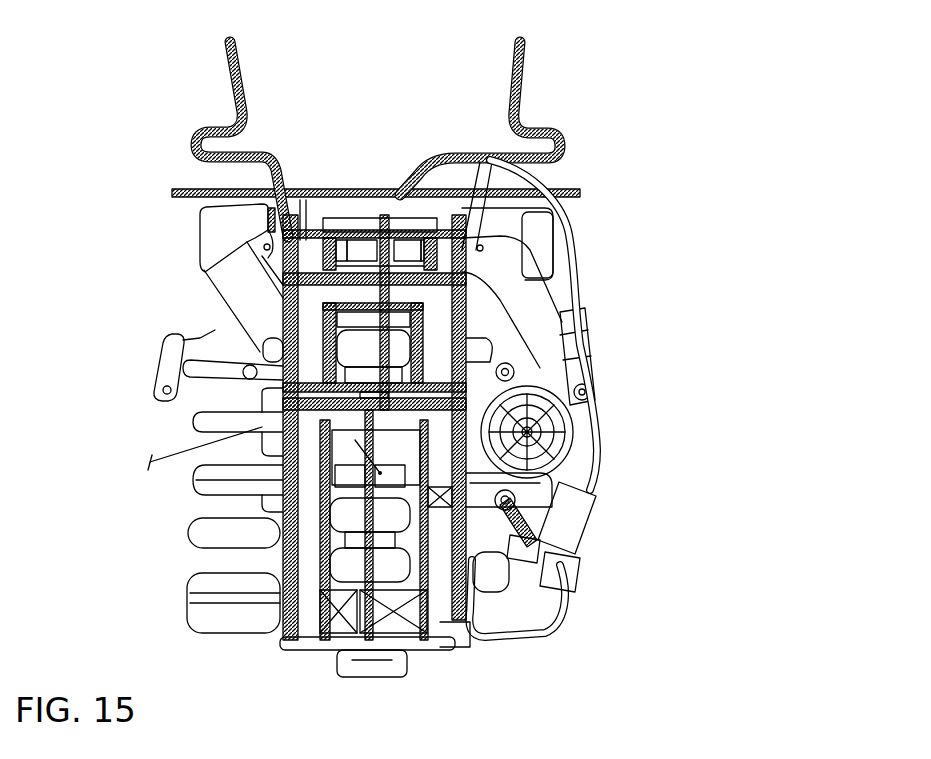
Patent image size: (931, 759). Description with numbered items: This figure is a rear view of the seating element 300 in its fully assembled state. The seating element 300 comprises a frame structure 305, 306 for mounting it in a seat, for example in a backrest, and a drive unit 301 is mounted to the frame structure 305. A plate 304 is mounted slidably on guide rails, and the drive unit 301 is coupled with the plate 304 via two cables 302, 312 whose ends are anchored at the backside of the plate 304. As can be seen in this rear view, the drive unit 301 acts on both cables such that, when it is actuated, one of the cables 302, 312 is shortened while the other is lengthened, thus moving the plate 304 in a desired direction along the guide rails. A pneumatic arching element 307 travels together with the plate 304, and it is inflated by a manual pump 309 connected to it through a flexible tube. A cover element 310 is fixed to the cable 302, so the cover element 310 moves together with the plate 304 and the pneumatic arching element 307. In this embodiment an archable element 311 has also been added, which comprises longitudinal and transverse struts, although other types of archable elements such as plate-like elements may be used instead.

The seating element 300 is at (415, 96).
The drive unit 301 is at (617, 500).
The cable 302 is at (387, 347).
The plate 304 is at (587, 457).
The frame structure 305 is at (187, 330).
The frame structure 306 is at (556, 135).
The pneumatic arching element 307 is at (260, 348).
The manual pump 309 is at (175, 452).
The cover element 310 is at (348, 283).
The archable element 311 is at (215, 478).
The cable 312 is at (370, 517).